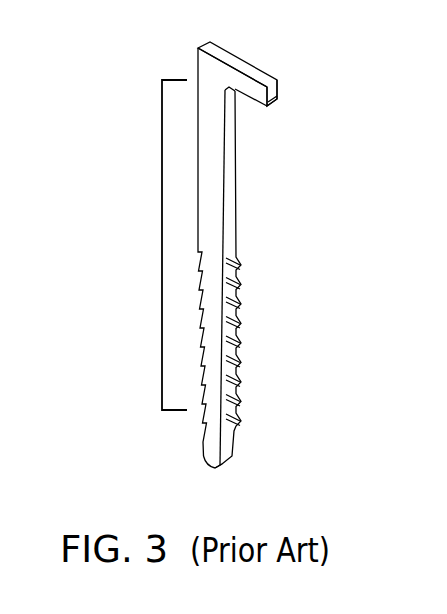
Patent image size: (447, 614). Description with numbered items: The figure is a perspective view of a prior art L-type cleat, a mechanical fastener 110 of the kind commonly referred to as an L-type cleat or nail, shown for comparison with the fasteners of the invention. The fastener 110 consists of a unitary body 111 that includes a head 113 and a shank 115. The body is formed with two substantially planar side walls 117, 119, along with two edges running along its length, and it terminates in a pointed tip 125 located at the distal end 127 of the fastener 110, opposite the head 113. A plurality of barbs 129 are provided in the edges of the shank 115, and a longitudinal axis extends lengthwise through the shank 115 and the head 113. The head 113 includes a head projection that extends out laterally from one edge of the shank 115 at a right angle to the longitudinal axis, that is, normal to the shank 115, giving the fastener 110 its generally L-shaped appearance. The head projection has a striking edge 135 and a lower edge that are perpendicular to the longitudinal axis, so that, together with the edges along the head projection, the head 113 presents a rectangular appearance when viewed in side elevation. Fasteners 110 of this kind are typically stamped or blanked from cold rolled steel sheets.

The mechanical fastener 110 is at (128, 73).
The unitary body 111 is at (162, 245).
The head 113 is at (215, 69).
The striking edge 135 is at (262, 73).
The shank 115 is at (212, 150).
The side wall 117 is at (212, 208).
The side wall 119 is at (235, 185).
The barbs 129 is at (240, 302).
The pointed tip 125 is at (215, 467).
The distal end 127 is at (217, 468).